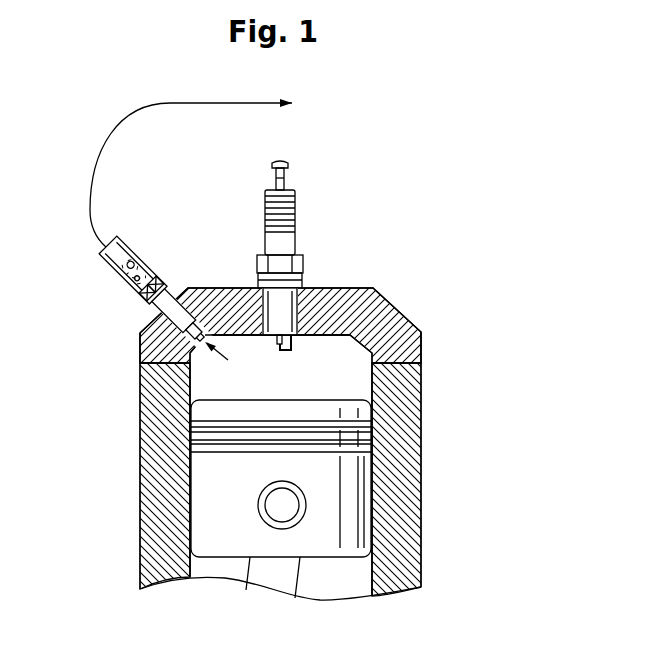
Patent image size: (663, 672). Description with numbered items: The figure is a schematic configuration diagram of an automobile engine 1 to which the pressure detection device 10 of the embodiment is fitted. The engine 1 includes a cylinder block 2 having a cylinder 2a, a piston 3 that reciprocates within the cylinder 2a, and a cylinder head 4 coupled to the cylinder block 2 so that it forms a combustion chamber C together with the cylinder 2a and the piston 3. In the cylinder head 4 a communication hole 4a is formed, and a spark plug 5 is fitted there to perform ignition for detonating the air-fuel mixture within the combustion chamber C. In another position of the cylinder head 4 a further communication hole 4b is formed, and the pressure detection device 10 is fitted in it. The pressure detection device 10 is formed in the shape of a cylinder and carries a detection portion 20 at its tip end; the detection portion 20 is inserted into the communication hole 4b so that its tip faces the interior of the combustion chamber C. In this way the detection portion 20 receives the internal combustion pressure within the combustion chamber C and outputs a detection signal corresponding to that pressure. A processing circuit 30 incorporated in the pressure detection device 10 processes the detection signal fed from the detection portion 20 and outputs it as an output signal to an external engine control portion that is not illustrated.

The engine 1 is at (377, 230).
The cylinder block 2 is at (430, 353).
The cylinder 2a is at (423, 478).
The piston 3 is at (192, 520).
The cylinder head 4 is at (417, 330).
The communication hole 4a is at (300, 308).
The communication hole 4b is at (140, 343).
The spark plug 5 is at (297, 238).
The pressure detection device 10 is at (150, 264).
The detection portion 20 is at (200, 338).
The processing circuit 30 is at (124, 284).
The combustion chamber C is at (316, 385).